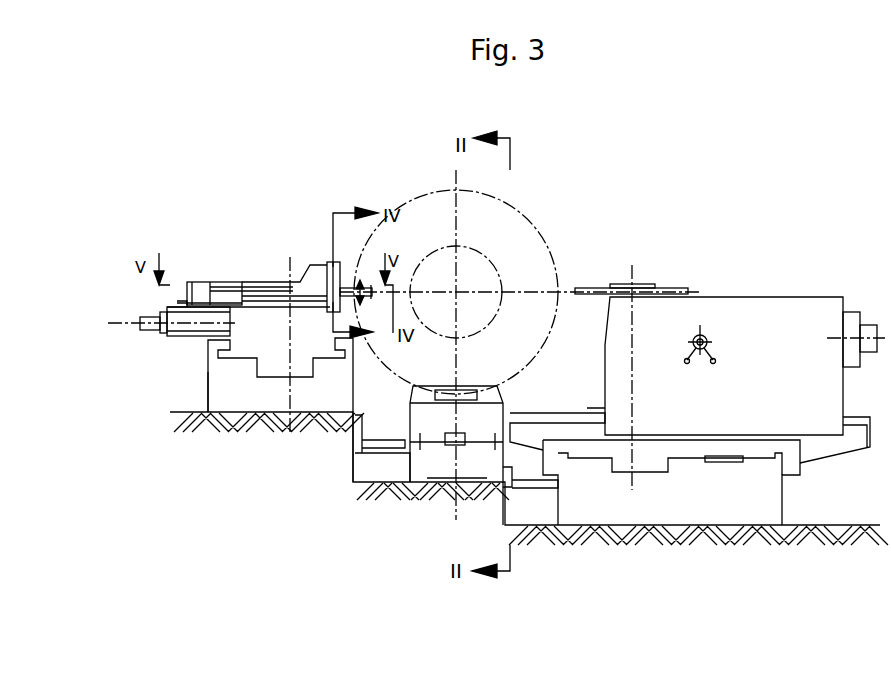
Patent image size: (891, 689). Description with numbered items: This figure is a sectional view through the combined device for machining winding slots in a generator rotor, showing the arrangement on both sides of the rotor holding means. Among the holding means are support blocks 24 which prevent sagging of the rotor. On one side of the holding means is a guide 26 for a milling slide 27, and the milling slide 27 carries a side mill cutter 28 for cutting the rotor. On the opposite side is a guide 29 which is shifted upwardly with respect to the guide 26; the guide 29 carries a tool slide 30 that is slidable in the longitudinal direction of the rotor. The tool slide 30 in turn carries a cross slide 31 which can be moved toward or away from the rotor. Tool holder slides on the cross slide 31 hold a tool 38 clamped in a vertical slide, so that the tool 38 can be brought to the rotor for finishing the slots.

The support blocks 24 is at (435, 420).
The guide 26 is at (720, 507).
The milling slide 27 is at (798, 312).
The side mill cutter 28 is at (587, 288).
The guide 29 is at (255, 393).
The tool slide 30 is at (252, 345).
The cross slide 31 is at (195, 327).
The tool 38 is at (366, 297).